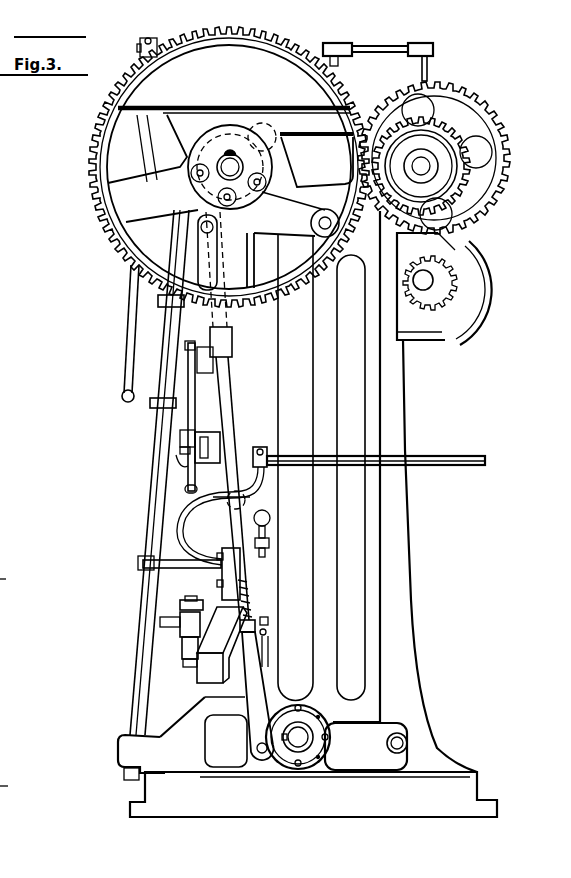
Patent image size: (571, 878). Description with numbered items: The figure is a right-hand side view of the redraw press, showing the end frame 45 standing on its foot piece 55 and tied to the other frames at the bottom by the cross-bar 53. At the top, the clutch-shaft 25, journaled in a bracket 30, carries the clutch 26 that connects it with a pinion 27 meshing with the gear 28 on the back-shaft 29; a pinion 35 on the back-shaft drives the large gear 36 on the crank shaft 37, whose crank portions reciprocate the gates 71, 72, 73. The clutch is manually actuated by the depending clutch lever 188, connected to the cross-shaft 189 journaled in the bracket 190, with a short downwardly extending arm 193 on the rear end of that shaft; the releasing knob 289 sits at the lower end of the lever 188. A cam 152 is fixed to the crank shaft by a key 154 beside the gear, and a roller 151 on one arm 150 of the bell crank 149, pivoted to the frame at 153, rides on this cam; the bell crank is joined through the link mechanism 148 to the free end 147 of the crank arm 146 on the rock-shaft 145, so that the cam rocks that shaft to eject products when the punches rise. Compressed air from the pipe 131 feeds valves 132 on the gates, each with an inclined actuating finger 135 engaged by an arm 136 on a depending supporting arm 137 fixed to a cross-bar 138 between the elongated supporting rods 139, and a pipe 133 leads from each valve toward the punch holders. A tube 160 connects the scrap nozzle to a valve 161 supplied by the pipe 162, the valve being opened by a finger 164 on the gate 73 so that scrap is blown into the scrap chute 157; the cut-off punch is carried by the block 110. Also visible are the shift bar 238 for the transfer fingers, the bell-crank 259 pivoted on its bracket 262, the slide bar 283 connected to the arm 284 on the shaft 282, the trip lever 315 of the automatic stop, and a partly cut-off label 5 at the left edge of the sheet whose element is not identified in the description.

The large gear 36 is at (211, 167).
The crank shaft 37 is at (230, 154).
The key 154 is at (238, 107).
The roller 151 is at (263, 123).
The cam 152 is at (190, 192).
The arm of bell crank 150 is at (283, 159).
The pivot 153 is at (322, 215).
The bell crank 149 is at (299, 238).
The bracket 190 is at (352, 41).
The cross-shaft 189 is at (368, 54).
The downwardly extending arm 193 is at (428, 70).
The gear 28 is at (493, 214).
The pinion 35 is at (450, 133).
The back-shaft 29 is at (421, 170).
The pinion 27 is at (457, 272).
The clutch 26 is at (472, 293).
The clutch-shaft 25 is at (432, 284).
The bracket 30 is at (423, 303).
The frame 45 is at (352, 363).
The pipe 162 is at (459, 462).
The valve 161 is at (264, 450).
The tube 160 is at (190, 478).
The finger 164 is at (266, 527).
The link mechanism 148 is at (249, 574).
The gate 71 is at (214, 367).
The gate 72 is at (214, 458).
The gate 73 is at (220, 513).
The supporting rod 139 is at (166, 325).
The cross-bar 138 is at (160, 302).
The valve 132 is at (155, 405).
The clutch lever 188 is at (123, 364).
The releasing knob 289 is at (121, 397).
The pipe 131 is at (185, 346).
The depending supporting arm 137 is at (180, 438).
The arm 136 is at (180, 451).
The actuating finger 135 is at (176, 466).
The pipe 133 is at (185, 482).
The block 110 is at (228, 593).
The shift bar 238 is at (186, 608).
The bell-crank 259 is at (180, 628).
The bracket 262 is at (187, 652).
The slide bar 283 is at (189, 672).
The scrap chute 157 is at (204, 683).
The shaft 282 is at (269, 622).
The arm 284 is at (267, 648).
The crank arm 146 is at (290, 758).
The rock-shaft 145 is at (309, 737).
The free end of crank arm 147 is at (285, 753).
The cross-bar 53 is at (406, 738).
The foot piece 55 is at (160, 795).
The trip lever 315 is at (0, 578).
The part 5 is at (5, 790).